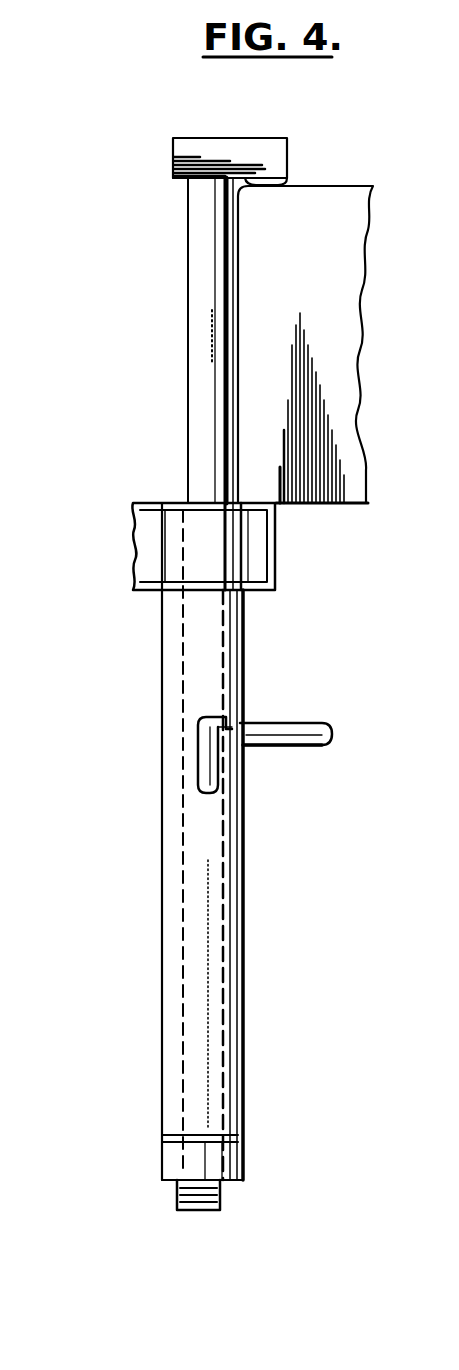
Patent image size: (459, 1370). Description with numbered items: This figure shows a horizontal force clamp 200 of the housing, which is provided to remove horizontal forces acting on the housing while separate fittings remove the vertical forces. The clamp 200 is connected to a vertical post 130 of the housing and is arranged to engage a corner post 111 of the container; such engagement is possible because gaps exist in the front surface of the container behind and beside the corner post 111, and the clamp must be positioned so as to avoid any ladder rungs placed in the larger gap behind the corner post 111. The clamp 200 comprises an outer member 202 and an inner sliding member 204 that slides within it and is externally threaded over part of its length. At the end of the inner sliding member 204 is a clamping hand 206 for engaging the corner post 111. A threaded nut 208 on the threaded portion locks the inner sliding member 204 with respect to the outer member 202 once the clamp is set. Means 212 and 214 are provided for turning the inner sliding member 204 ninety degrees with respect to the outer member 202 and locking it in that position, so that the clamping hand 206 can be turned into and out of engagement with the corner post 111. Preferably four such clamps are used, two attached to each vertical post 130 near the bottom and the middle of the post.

The corner post 111 is at (323, 275).
The vertical post 130 is at (275, 555).
The horizontal force clamp 200 is at (147, 787).
The outer member 202 is at (244, 892).
The inner sliding member 204 is at (200, 363).
The clamping hand 206 is at (267, 154).
The threaded nut 208 is at (244, 1160).
The means for turning and locking the inner sliding member 212 is at (333, 742).
The means for turning and locking the inner sliding member 214 is at (240, 722).